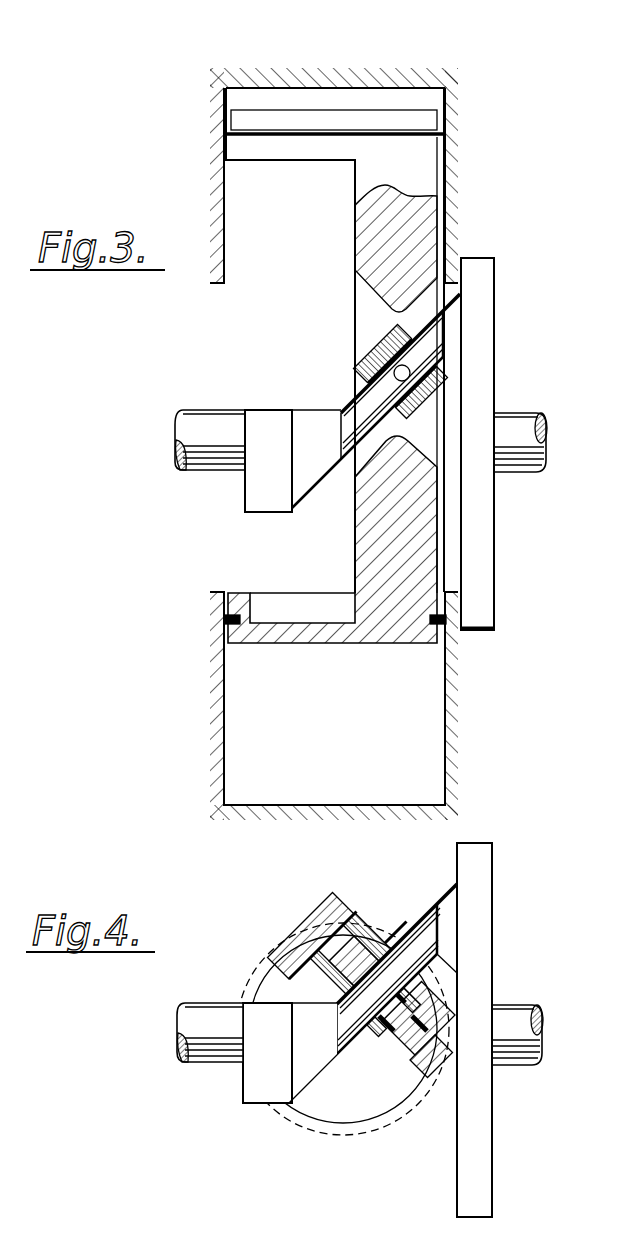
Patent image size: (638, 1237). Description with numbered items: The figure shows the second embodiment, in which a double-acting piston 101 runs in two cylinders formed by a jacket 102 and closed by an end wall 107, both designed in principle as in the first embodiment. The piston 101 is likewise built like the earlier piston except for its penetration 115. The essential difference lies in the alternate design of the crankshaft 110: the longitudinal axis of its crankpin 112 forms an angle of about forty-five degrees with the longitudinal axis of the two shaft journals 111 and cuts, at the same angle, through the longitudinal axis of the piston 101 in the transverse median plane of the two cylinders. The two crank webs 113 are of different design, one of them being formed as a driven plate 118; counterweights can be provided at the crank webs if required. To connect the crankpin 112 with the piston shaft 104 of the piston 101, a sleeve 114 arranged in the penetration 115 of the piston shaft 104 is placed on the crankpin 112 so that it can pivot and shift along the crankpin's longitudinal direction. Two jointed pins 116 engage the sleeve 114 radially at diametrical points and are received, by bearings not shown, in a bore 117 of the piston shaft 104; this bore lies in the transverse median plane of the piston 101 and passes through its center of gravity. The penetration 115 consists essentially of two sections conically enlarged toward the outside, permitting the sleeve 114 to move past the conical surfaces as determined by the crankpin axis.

In FIG. 3, the piston 101 is at (336, 168).
In FIG. 4, the piston 101 is at (246, 964).
In FIG. 3, the jacket 102 is at (215, 188).
In FIG. 4, the jacket 102 is at (336, 1140).
In FIG. 3, the piston shaft 104 is at (372, 533).
In FIG. 4, the piston shaft 104 is at (297, 947).
In FIG. 3, the end wall 107 is at (403, 92).
In FIG. 3, the crankshaft 110 is at (528, 401).
In FIG. 4, the crankshaft 110 is at (539, 991).
In FIG. 3, the shaft journal 111 is at (212, 458).
In FIG. 4, the shaft journal 111 is at (188, 1024).
In FIG. 3, the crankpin 112 is at (363, 405).
In FIG. 4, the crankpin 112 is at (412, 955).
In FIG. 3, the crank web 113 is at (268, 498).
In FIG. 4, the crank web 113 is at (257, 1078).
In FIG. 3, the sleeve 114 is at (383, 338).
In FIG. 4, the sleeve 114 is at (362, 930).
In FIG. 3, the penetration 115 is at (372, 302).
In FIG. 4, the penetration 115 is at (365, 1037).
In FIG. 3, the jointed pin 116 is at (412, 370).
In FIG. 4, the jointed pin 116 is at (320, 970).
In FIG. 4, the bore 117 is at (323, 937).
In FIG. 3, the driven plate 118 is at (489, 306).
In FIG. 4, the driven plate 118 is at (480, 911).